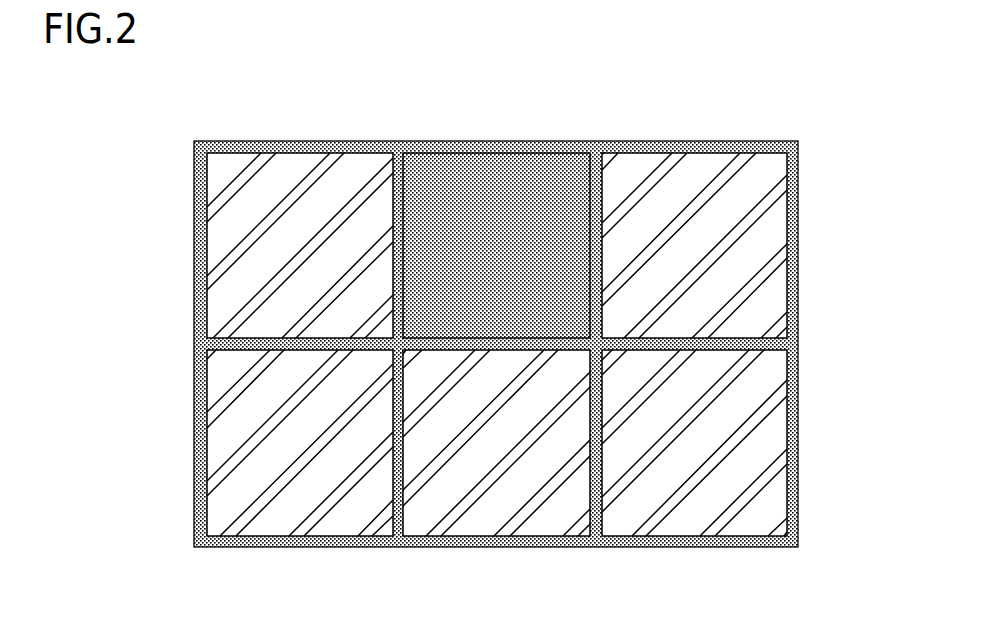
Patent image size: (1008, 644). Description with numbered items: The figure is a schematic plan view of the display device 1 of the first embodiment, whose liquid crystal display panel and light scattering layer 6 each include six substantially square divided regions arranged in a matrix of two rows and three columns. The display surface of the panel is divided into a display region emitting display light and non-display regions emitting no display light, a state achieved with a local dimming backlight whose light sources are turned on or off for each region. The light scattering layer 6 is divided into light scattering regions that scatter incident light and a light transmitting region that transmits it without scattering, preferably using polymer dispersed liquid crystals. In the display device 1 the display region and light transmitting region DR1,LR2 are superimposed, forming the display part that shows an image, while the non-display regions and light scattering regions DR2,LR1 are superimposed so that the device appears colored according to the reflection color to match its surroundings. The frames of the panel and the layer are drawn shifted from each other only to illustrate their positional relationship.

The display device 1 is at (182, 121).
The light scattering layer 6 is at (802, 511).
The display region, light transmitting region DR1,LR2 is at (445, 177).
The non-display regions, light scattering regions DR2,LR1 is at (233, 232).